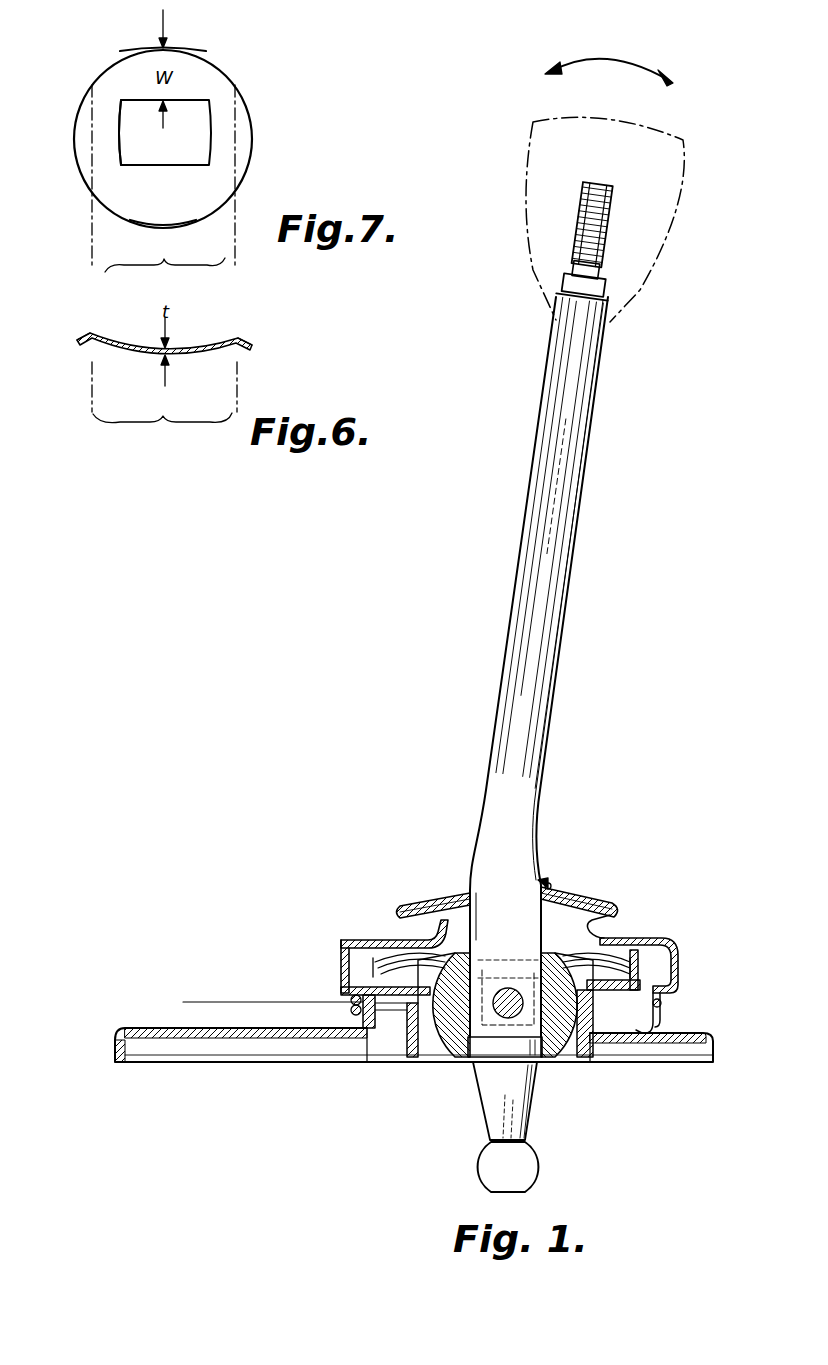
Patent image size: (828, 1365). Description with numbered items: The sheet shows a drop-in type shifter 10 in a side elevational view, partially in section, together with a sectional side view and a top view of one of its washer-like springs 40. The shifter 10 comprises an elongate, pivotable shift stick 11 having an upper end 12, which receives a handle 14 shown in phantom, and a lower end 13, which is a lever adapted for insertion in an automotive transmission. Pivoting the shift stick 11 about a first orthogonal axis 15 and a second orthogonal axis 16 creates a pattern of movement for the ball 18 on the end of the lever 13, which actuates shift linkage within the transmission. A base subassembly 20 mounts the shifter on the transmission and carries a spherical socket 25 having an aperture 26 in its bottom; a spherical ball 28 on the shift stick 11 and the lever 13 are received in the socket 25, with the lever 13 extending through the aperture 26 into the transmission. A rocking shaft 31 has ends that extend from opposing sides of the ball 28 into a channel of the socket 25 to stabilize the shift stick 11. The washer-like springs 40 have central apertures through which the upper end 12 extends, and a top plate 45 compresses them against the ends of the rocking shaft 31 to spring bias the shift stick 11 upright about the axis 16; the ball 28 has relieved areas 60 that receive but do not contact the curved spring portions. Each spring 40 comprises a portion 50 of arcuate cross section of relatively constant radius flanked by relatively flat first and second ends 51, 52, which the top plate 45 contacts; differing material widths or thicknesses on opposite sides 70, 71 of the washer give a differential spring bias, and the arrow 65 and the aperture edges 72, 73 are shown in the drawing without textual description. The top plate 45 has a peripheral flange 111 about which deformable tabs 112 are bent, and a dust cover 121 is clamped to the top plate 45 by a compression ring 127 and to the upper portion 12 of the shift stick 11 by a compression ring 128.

In FIG. 1, the shifter 10 is at (630, 610).
In FIG. 1, the shift stick 11 is at (557, 547).
In FIG. 1, the upper end 12 is at (568, 487).
In FIG. 1, the lower end 13 is at (500, 1093).
In FIG. 1, the handle 14 is at (676, 165).
In FIG. 1, the first orthogonal axis 15 is at (495, 1032).
In FIG. 1, the second orthogonal axis 16 is at (283, 985).
In FIG. 1, the ball 18 is at (525, 1157).
In FIG. 1, the base subassembly 20 is at (280, 1082).
In FIG. 1, the spherical socket 25 is at (571, 1052).
In FIG. 1, the aperture 26 is at (547, 1058).
In FIG. 1, the spherical ball 28 is at (420, 1060).
In FIG. 1, the rocking shaft 31 is at (540, 940).
In FIG. 7, the washer-like springs 40 is at (227, 72).
In FIG. 6, the washer-like springs 40 is at (237, 337).
In FIG. 1, the washer-like springs 40 is at (499, 886).
In FIG. 1, the top plate 45 is at (373, 958).
In FIG. 7, the portion of arcuate cross section 50 is at (165, 276).
In FIG. 6, the portion of arcuate cross section 50 is at (164, 406).
In FIG. 7, the first end 51 is at (85, 107).
In FIG. 6, the first end 51 is at (82, 336).
In FIG. 1, the first end 51 is at (358, 937).
In FIG. 7, the second end 52 is at (242, 117).
In FIG. 6, the second end 52 is at (252, 345).
In FIG. 1, the second end 52 is at (637, 940).
In FIG. 1, the relieved areas 60 is at (390, 1038).
In FIG. 1, the pivoting movement 65 is at (620, 57).
In FIG. 7, the side of washer 70 is at (196, 62).
In FIG. 7, the opposite side of washer 71 is at (204, 212).
In FIG. 7, the aperture side 72 is at (222, 167).
In FIG. 7, the aperture side 73 is at (107, 145).
In FIG. 1, the peripheral flange 111 is at (676, 978).
In FIG. 1, the deformable tabs 112 is at (653, 968).
In FIG. 1, the dust cover 121 is at (617, 906).
In FIG. 1, the compression ring 127 is at (664, 1003).
In FIG. 1, the compression ring 128 is at (551, 884).